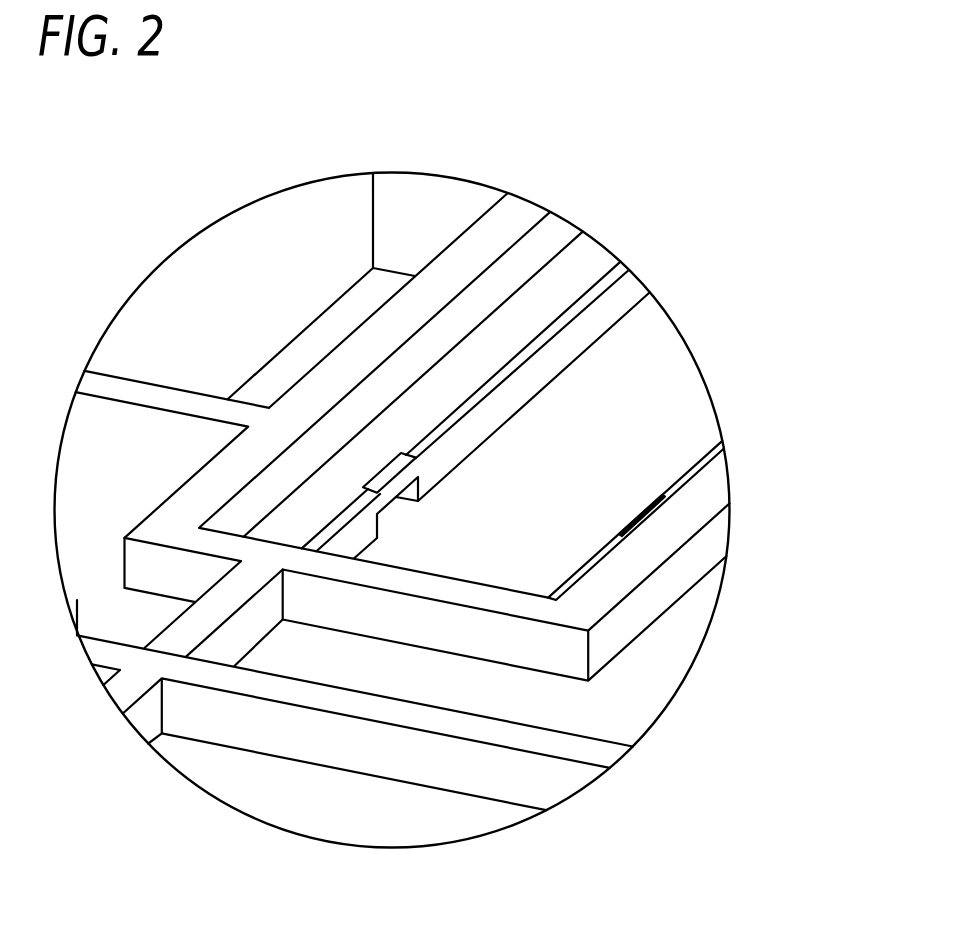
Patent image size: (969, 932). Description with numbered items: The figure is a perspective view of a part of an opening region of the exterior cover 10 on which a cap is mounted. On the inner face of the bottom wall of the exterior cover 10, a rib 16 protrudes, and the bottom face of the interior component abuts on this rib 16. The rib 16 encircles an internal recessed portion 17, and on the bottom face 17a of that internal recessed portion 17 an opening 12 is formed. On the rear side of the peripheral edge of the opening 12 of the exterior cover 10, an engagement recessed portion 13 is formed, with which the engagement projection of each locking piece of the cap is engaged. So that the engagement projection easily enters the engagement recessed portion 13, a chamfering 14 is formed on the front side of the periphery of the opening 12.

The exterior cover 10 is at (645, 653).
The opening 12 is at (643, 433).
The engagement recessed portion 13 is at (390, 507).
The chamfering 14 is at (403, 462).
The rib 16 is at (685, 523).
The internal recessed portion 17 is at (550, 302).
The bottom face 17a is at (513, 327).